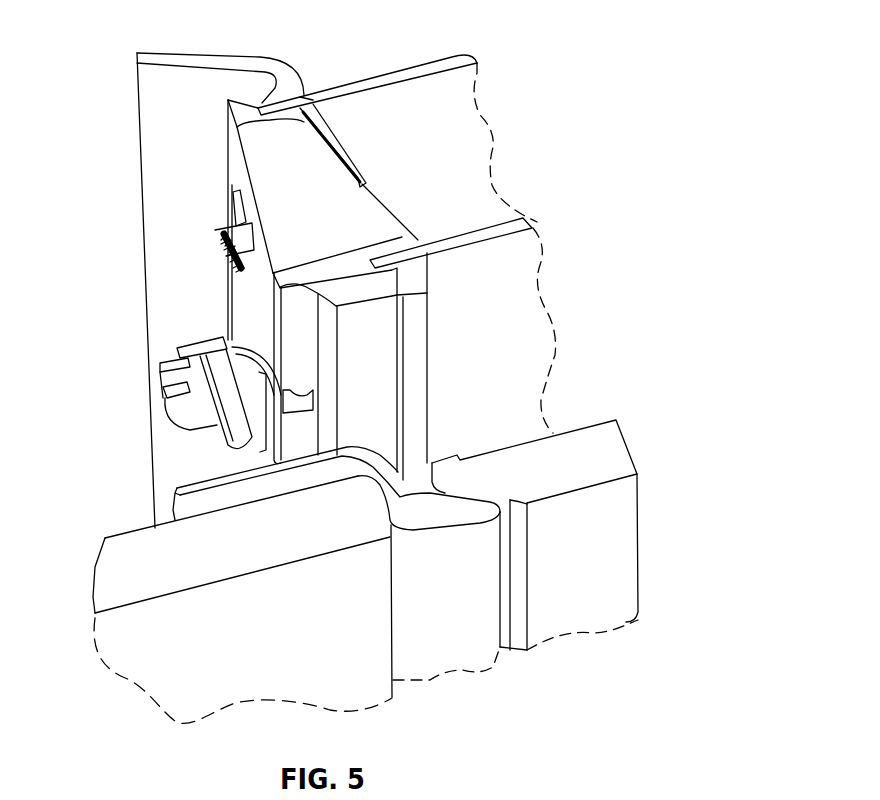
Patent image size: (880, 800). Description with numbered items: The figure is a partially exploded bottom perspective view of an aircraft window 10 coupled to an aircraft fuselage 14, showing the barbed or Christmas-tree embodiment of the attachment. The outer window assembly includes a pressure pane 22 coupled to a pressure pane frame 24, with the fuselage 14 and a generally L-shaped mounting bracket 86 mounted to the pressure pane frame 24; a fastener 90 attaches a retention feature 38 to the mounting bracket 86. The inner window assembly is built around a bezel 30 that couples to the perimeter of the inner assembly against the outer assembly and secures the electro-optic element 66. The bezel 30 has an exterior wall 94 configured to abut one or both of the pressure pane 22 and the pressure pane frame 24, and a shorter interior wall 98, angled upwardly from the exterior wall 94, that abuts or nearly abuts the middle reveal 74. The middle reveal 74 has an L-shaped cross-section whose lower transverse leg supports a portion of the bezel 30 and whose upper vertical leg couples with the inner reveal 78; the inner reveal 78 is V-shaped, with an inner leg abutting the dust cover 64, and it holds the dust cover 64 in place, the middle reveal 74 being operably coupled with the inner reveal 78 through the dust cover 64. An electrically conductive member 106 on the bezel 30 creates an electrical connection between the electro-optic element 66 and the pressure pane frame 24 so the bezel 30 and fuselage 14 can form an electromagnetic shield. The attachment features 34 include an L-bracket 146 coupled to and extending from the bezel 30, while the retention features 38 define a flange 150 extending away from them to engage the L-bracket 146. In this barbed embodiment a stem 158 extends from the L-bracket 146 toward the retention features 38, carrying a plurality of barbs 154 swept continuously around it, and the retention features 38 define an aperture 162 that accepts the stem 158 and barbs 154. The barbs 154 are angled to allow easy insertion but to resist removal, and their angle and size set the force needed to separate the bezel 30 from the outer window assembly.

The aircraft window 10 is at (660, 60).
The aircraft fuselage 14 is at (190, 687).
The pressure pane 22 is at (593, 600).
The pressure pane frame 24 is at (467, 633).
The bezel 30 is at (253, 163).
The attachment features 34 is at (210, 232).
The retention features 38 is at (303, 383).
The dust cover 64 is at (467, 130).
The electro-optic element 66 is at (513, 300).
The middle reveal 74 is at (337, 143).
The inner reveal 78 is at (220, 87).
The mounting bracket 86 is at (178, 487).
The fastener 90 is at (183, 345).
The exterior wall 94 is at (417, 343).
The interior wall 98 is at (397, 210).
The electrically conductive member 106 is at (408, 235).
The L-bracket 146 is at (227, 197).
The flange 150 is at (382, 430).
The barbs 154 is at (273, 272).
The stem 158 is at (250, 208).
The aperture 162 is at (264, 350).